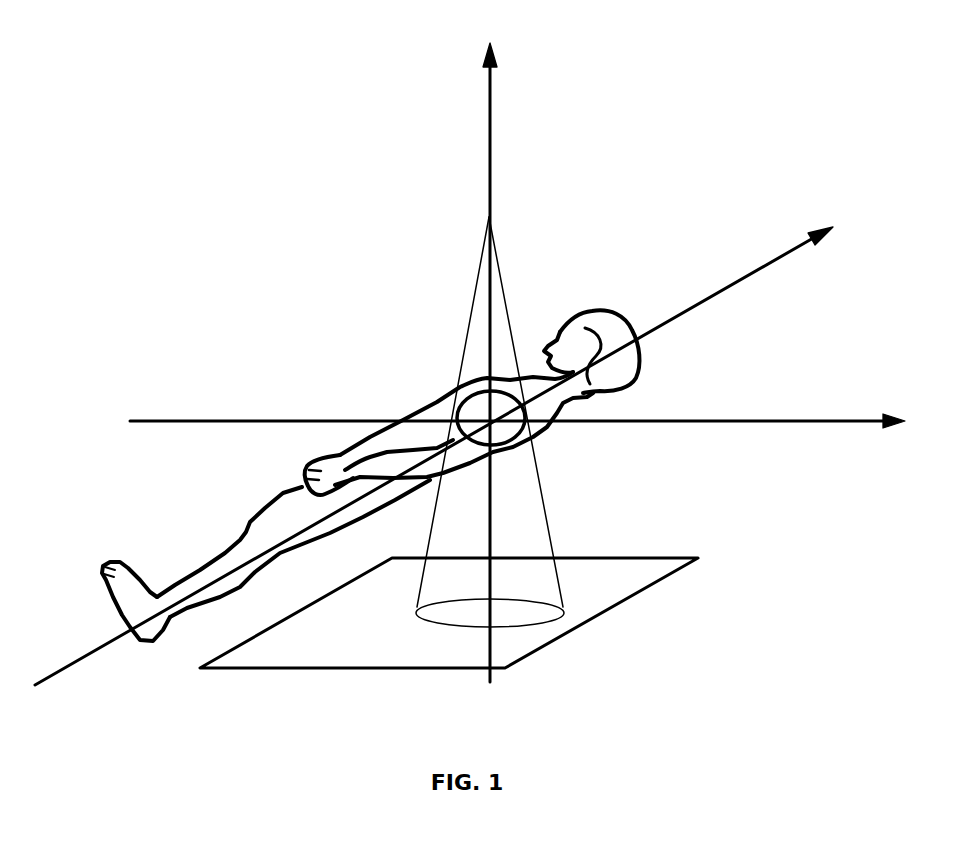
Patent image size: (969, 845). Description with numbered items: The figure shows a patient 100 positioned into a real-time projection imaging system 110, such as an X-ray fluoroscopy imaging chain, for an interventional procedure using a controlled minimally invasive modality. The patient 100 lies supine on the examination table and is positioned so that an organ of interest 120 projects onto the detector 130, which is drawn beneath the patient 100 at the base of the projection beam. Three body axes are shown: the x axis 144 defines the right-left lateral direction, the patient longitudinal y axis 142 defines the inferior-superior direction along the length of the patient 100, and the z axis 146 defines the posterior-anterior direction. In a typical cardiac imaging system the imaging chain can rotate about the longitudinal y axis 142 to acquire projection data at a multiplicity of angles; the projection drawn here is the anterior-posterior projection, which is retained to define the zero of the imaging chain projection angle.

The patient 100 is at (548, 433).
The projection imaging system 110 is at (368, 257).
The organ of interest 120 is at (456, 404).
The detector 130 is at (640, 557).
The patient longitudinal axis y 142 is at (760, 270).
The axis x 144 is at (810, 422).
The axis z 146 is at (490, 88).